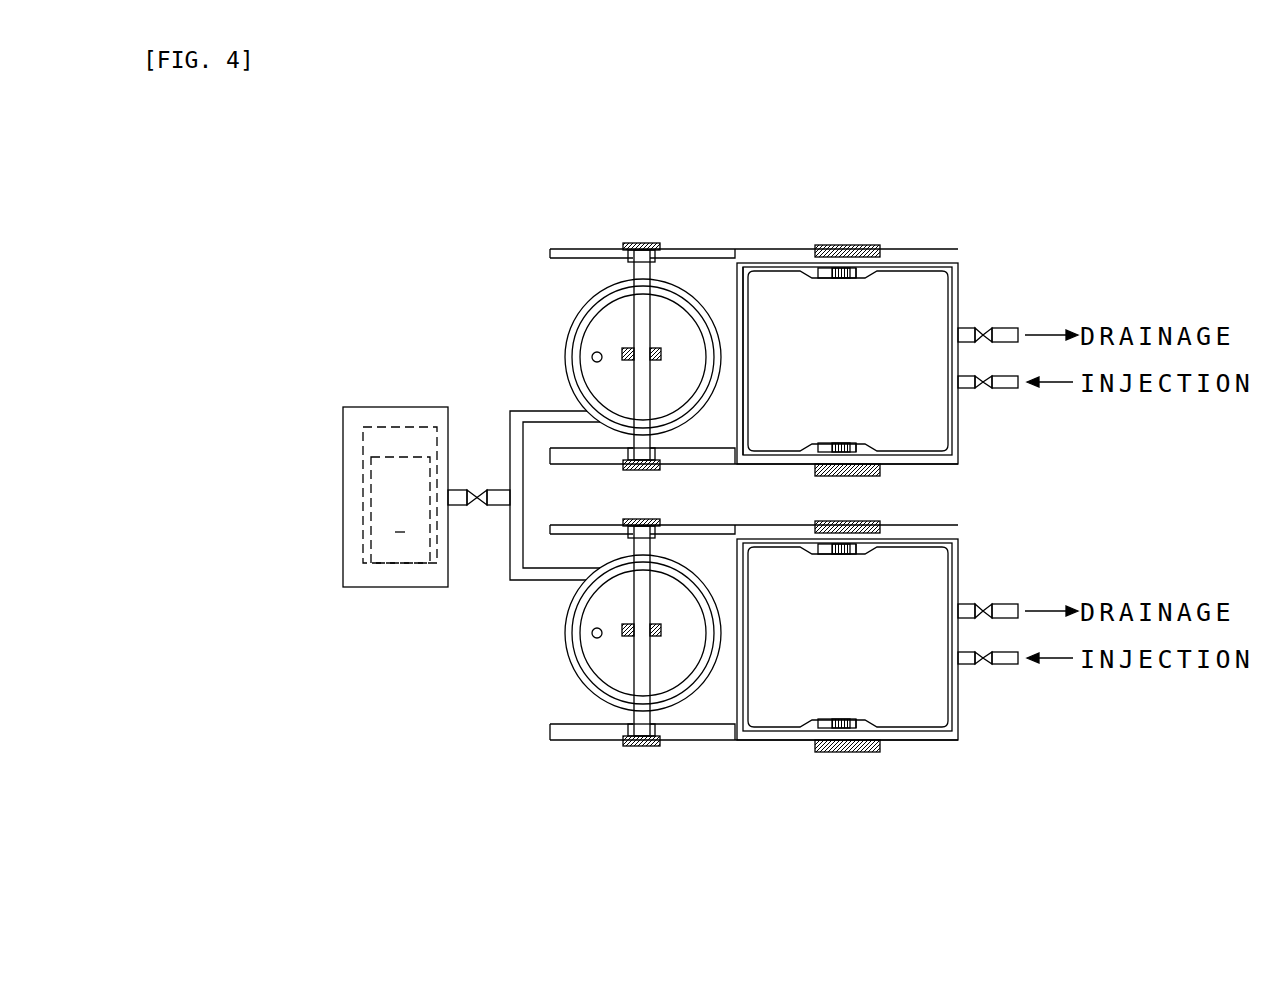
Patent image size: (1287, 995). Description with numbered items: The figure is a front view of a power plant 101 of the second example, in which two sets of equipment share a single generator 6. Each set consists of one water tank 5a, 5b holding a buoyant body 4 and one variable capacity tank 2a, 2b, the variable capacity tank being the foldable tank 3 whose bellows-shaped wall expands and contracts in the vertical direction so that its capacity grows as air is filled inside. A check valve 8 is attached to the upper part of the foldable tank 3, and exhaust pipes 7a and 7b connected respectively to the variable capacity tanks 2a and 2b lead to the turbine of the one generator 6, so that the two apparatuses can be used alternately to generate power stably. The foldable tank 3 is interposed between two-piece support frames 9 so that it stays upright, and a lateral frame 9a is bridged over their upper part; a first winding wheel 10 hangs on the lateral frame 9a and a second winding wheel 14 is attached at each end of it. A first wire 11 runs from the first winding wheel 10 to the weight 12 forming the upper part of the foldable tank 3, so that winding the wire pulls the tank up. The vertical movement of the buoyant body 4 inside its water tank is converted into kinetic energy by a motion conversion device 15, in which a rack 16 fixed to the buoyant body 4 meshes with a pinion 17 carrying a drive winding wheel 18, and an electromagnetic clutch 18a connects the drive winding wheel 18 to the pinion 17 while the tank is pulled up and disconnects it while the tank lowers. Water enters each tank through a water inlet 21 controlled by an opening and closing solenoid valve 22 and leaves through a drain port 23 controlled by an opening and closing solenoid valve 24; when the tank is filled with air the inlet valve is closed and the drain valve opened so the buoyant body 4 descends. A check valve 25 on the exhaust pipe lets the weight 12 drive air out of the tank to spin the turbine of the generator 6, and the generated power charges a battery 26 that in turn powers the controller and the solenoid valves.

The power plant 101 is at (484, 217).
The variable capacity tank 2a is at (610, 290).
The variable capacity tank 2b is at (575, 683).
The foldable tank 3 is at (600, 432).
The buoyant body 4 is at (772, 728).
The water tank 5a is at (913, 262).
The water tank 5b is at (945, 742).
The generator 6 is at (356, 497).
The exhaust pipe 7a is at (518, 412).
The exhaust pipe 7b is at (513, 582).
The check valve 8 is at (592, 357).
The support frame 9 is at (650, 313).
The lateral frame 9a is at (656, 353).
The first winding wheel 10 is at (661, 352).
The first wire 11 is at (735, 300).
The weight 12 is at (610, 320).
The second winding wheel 14 is at (642, 243).
The motion conversion device 15 is at (857, 284).
The rack 16 is at (812, 728).
The pinion 17 is at (862, 722).
The drive winding wheel 18 is at (862, 244).
The electromagnetic clutch 18a is at (845, 266).
The water inlet 21 is at (965, 391).
The opening and closing solenoid valve 22 is at (982, 389).
The drain port 23 is at (965, 327).
The opening and closing solenoid valve 24 is at (983, 328).
The check valve 25 is at (478, 490).
The battery 26 is at (370, 497).